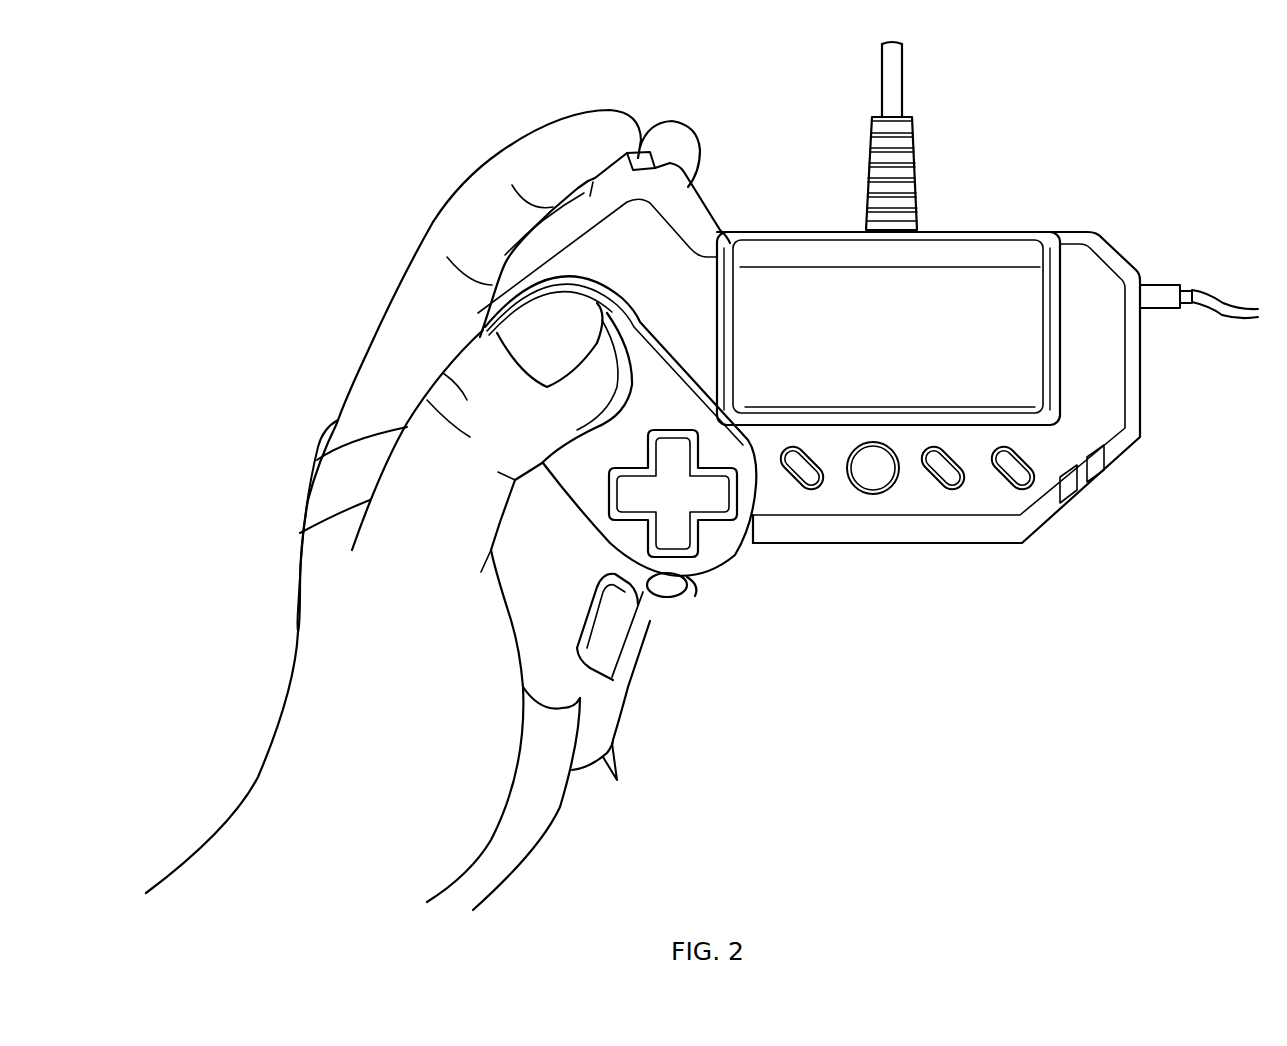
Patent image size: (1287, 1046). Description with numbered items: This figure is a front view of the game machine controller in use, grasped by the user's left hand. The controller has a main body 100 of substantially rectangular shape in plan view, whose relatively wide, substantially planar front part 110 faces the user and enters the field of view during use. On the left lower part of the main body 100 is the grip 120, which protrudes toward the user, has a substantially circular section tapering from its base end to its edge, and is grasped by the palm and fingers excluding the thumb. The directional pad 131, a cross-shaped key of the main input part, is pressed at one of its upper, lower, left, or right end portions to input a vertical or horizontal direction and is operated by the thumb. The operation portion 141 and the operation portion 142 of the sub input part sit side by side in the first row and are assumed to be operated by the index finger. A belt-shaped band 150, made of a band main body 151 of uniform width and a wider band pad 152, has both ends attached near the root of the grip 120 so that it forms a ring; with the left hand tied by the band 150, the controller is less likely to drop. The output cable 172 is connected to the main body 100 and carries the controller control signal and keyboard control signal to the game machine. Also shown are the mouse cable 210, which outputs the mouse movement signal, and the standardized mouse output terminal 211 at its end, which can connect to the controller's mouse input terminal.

The main body 100 is at (968, 548).
The front part 110 is at (843, 500).
The grip 120 is at (583, 683).
The directional pad 131 is at (684, 540).
The operation portion 141 is at (543, 223).
The operation portion 142 is at (656, 150).
The band 150 is at (290, 593).
The band main body 151 is at (637, 647).
The band pad 152 is at (297, 550).
The output cable 172 is at (895, 90).
The mouse cable 210 is at (1222, 307).
The mouse output terminal 211 is at (1163, 310).